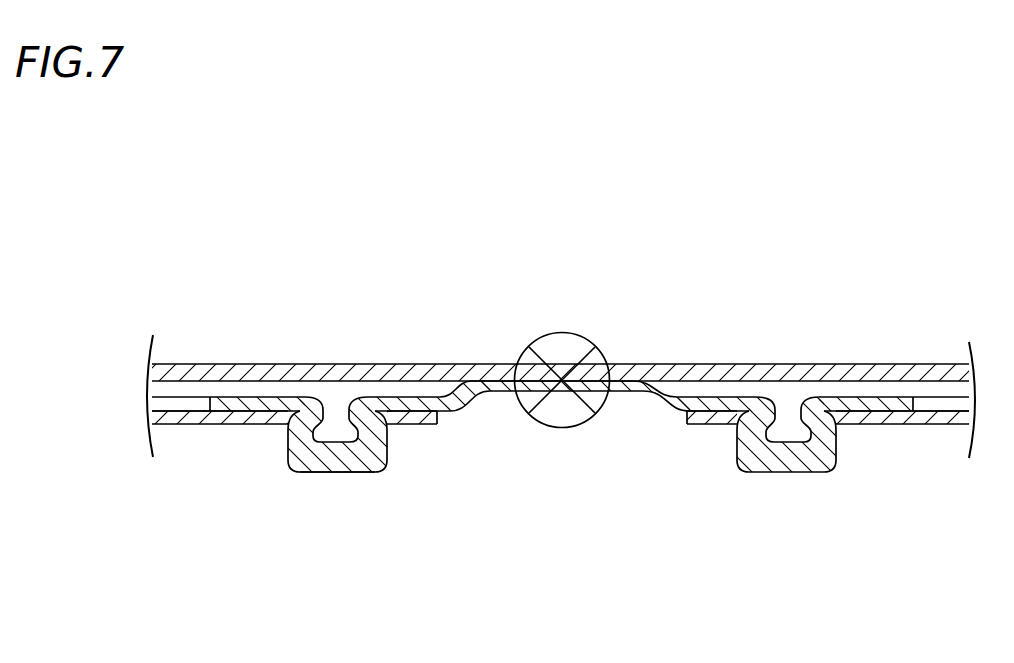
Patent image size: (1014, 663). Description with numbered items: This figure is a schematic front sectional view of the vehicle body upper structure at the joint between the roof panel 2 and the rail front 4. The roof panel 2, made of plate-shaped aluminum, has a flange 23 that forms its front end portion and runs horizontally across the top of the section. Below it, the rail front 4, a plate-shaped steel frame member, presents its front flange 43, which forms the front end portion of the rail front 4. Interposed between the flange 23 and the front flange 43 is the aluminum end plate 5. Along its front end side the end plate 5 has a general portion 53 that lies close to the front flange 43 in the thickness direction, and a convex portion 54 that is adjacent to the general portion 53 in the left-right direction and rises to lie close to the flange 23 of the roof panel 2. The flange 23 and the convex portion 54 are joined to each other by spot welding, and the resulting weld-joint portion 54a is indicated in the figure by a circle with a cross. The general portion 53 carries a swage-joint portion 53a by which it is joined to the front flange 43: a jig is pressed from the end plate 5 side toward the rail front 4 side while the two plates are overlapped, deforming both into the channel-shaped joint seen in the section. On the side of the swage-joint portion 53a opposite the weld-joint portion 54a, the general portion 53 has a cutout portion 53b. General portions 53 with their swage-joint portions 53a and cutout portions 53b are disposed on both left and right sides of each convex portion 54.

The roof panel 2 is at (560, 292).
The flange 23 is at (842, 365).
The rail front 4 is at (912, 425).
The front flange 43 is at (230, 424).
The end plate 5 is at (582, 411).
The general portion 53 is at (399, 405).
The swage-joint portion 53a is at (301, 486).
The cutout portion 53b is at (183, 424).
The convex portion 54 is at (612, 396).
The weld-joint portion 54a is at (579, 333).